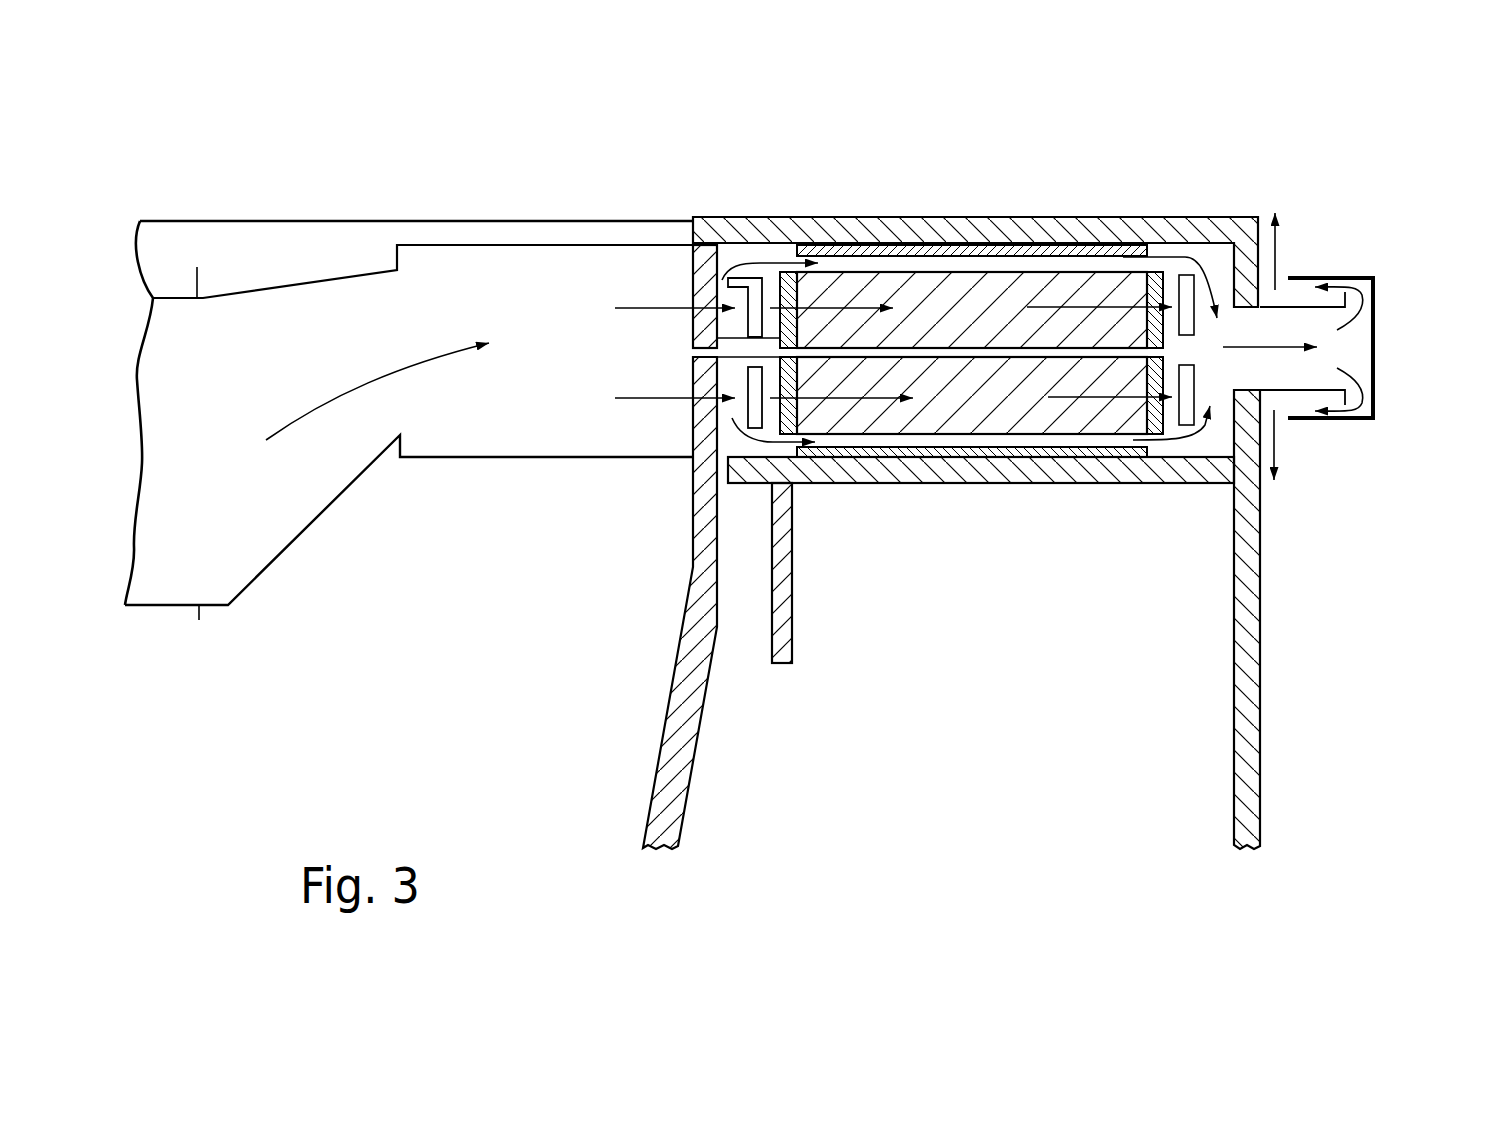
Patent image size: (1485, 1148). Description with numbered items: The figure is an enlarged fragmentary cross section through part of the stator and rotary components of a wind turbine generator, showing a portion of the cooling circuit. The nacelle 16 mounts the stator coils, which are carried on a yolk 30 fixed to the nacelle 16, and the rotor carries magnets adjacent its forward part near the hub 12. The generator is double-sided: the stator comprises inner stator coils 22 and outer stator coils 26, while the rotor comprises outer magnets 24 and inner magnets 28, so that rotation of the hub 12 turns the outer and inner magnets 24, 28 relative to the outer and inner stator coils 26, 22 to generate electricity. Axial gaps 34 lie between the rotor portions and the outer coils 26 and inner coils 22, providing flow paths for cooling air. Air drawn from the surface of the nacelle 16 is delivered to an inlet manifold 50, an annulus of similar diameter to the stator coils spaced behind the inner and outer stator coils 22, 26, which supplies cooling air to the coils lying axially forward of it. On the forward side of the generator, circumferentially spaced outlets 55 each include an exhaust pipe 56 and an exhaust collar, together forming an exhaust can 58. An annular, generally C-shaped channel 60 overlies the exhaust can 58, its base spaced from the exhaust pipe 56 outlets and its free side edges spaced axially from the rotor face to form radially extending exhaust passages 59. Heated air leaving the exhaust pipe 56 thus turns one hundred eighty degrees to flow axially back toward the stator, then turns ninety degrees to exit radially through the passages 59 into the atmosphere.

The hub 12 is at (1261, 650).
The nacelle 16 is at (368, 221).
The inner stator coils 22 is at (983, 412).
The outer magnets 24 is at (927, 245).
The outer stator coils 26 is at (852, 285).
The inner magnets 28 is at (843, 460).
The yolk 30 is at (730, 293).
The axial gaps 34 is at (1030, 263).
The inlet manifold 50 is at (590, 312).
The outlets 55 is at (1292, 365).
The exhaust pipe 56 is at (1290, 393).
The exhaust can 58 is at (1345, 302).
The exhaust passages 59 is at (1282, 285).
The channel 60 is at (1375, 337).